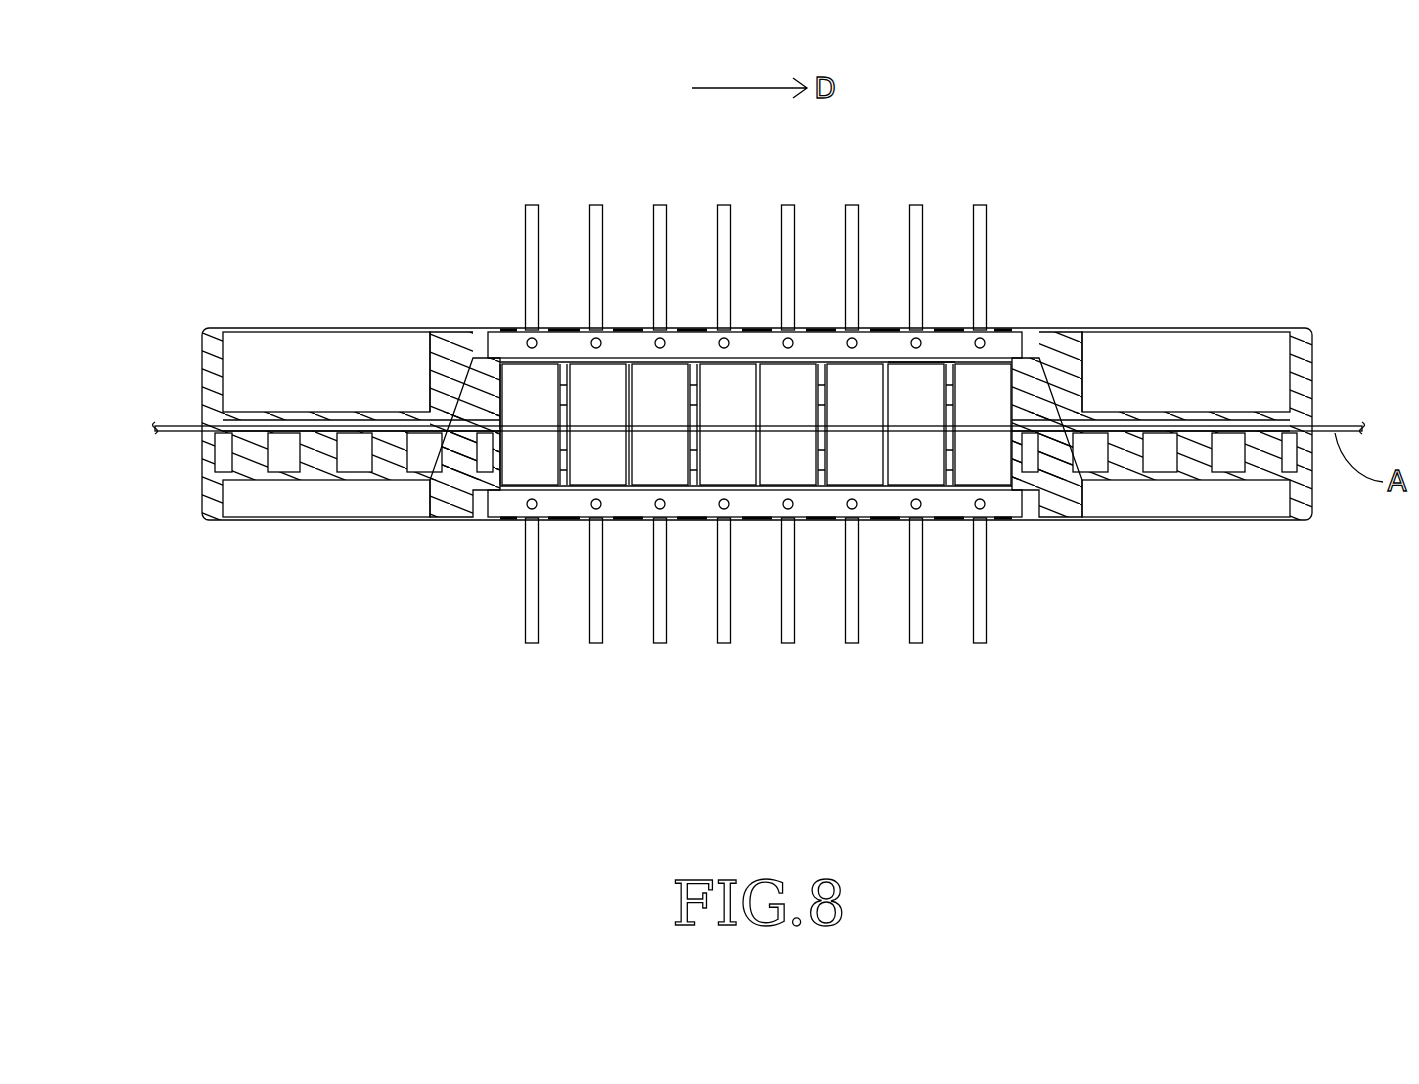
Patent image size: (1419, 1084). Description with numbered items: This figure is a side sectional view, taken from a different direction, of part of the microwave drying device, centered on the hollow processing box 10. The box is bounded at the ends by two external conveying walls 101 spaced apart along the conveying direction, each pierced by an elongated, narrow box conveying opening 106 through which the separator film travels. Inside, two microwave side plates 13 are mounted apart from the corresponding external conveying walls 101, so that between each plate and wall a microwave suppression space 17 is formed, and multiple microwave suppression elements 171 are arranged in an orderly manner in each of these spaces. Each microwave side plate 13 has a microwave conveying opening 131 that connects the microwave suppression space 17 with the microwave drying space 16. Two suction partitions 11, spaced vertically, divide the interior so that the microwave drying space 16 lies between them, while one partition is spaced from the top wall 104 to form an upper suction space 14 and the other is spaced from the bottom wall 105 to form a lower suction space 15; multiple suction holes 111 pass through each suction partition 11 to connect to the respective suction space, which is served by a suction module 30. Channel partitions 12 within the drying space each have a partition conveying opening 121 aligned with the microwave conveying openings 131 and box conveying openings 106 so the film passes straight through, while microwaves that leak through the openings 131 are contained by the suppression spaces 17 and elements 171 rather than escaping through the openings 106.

The processing box 10 is at (1114, 310).
The external conveying wall 101 is at (1313, 358).
The box conveying opening 106 is at (193, 419).
The microwave suppression space 17 is at (734, 525).
The microwave suppression element 171 is at (317, 456).
The microwave side plate 13 is at (752, 442).
The microwave conveying opening 131 is at (507, 420).
The suction partition 11 is at (784, 428).
The suction hole 111 is at (925, 350).
The channel partition 12 is at (740, 432).
The partition conveying opening 121 is at (637, 420).
The upper suction space 14 is at (823, 345).
The top wall 104 is at (755, 241).
The bottom wall 105 is at (755, 616).
The lower suction space 15 is at (822, 500).
The microwave drying space 16 is at (930, 465).
The suction module 30 is at (988, 229).